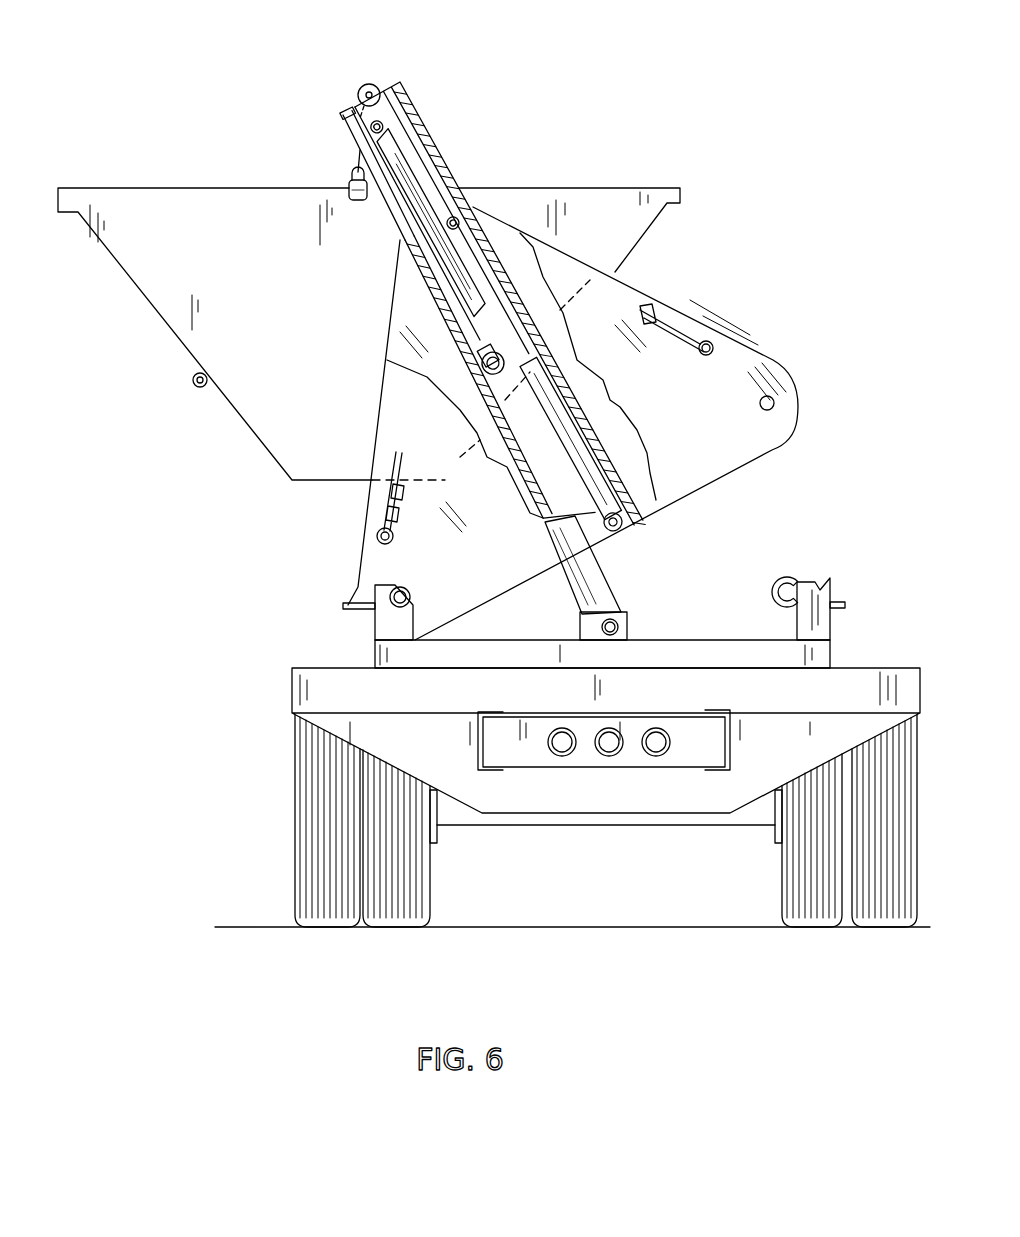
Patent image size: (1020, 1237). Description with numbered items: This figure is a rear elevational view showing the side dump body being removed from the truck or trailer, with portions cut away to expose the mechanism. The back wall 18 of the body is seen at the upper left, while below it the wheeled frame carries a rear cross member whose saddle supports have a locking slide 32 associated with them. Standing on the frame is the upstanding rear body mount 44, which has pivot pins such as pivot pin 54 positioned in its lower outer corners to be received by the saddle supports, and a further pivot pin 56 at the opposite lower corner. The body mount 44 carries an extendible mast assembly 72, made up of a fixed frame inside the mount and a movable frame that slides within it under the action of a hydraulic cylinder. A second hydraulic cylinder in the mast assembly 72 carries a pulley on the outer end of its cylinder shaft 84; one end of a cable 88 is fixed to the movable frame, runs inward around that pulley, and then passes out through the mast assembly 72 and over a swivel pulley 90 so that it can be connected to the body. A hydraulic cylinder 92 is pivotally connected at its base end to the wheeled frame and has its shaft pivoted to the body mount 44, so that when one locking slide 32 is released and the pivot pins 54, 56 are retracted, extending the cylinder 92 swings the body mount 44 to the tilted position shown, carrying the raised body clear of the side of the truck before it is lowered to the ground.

The back wall 18 is at (271, 341).
The locking slide 32 is at (783, 579).
The rear body mount 44 is at (708, 295).
The pivot pin 54 is at (775, 403).
The pivot pin 56 is at (410, 590).
The extendible mast assembly 72 is at (481, 324).
The cylinder shaft 84 is at (472, 312).
The cable 88 is at (357, 165).
The swivel pulley 90 is at (362, 88).
The hydraulic cylinder 92 is at (606, 565).